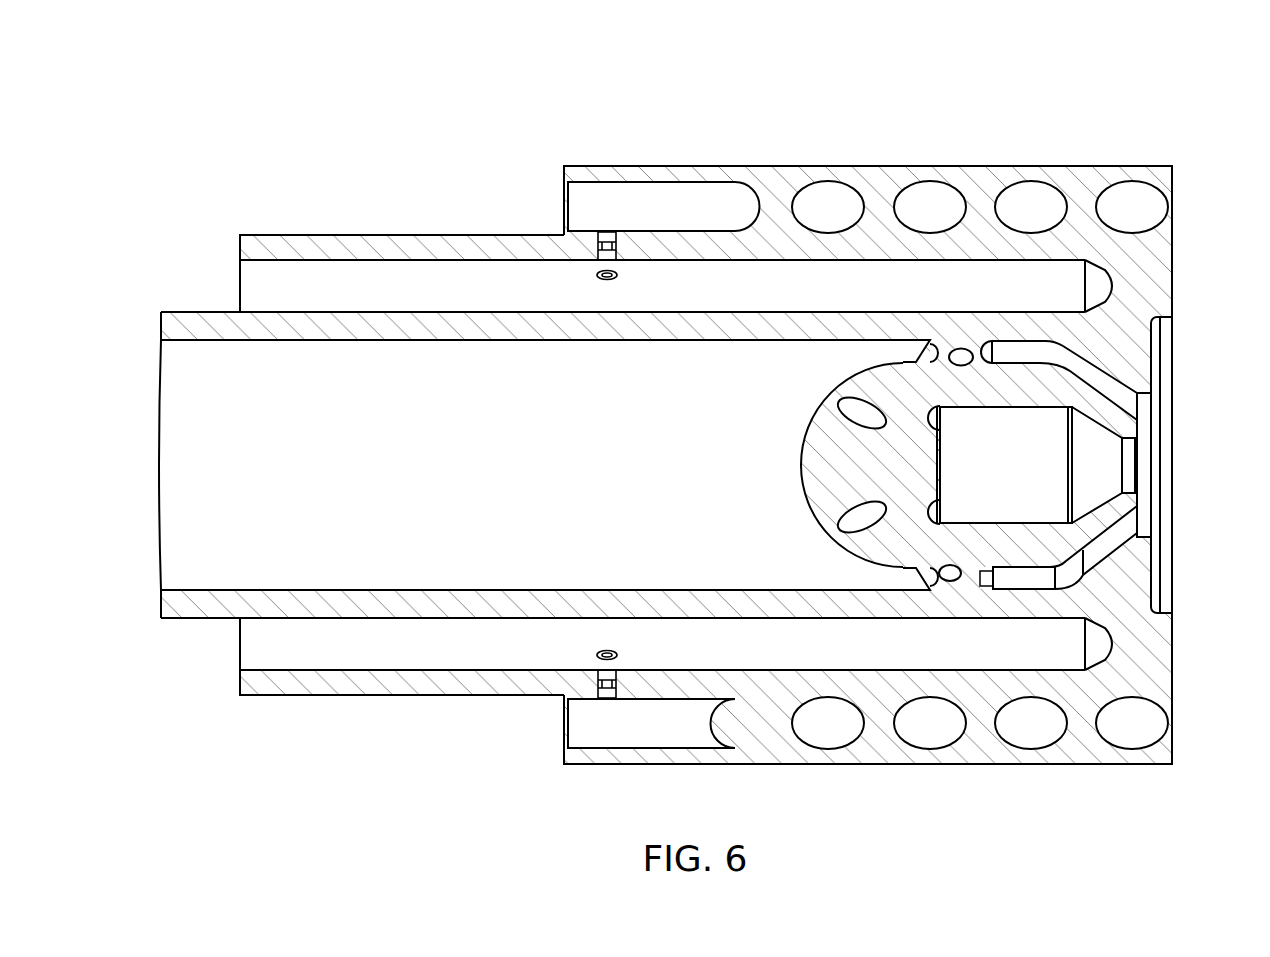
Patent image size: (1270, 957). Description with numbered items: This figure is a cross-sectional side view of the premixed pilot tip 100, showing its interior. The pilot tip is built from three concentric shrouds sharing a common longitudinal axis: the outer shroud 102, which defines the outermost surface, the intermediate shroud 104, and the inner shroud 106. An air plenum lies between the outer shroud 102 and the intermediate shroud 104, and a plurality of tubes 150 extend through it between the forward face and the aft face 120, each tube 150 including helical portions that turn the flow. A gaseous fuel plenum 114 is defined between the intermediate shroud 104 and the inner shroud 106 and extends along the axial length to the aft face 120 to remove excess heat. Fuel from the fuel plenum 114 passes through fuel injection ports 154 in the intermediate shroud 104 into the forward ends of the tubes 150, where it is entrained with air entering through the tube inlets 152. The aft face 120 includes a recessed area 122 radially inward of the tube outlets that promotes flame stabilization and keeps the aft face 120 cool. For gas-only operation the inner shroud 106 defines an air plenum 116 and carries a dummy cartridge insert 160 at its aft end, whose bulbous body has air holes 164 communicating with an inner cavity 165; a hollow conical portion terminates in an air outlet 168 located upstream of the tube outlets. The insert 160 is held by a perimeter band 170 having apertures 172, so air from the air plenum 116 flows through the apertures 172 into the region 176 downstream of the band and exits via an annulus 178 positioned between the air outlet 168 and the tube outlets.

The premixed pilot tip 100 is at (433, 100).
The outer shroud 102 is at (876, 166).
The intermediate shroud 104 is at (387, 235).
The inner shroud 106 is at (173, 312).
The gaseous fuel plenum 114 is at (303, 657).
The air plenum 116 is at (265, 489).
The aft face 120 is at (1157, 283).
The recessed area 122 is at (1158, 353).
The tube 150 is at (813, 734).
The tube inlet 152 is at (563, 204).
The fuel injection port 154 is at (603, 229).
The dummy cartridge insert 160 is at (786, 478).
The air hole 164 is at (865, 532).
The inner cavity 165 is at (1020, 489).
The air outlet 168 is at (1128, 467).
The perimeter band 170 is at (979, 363).
The aperture 172 is at (1010, 618).
The region 176 is at (997, 575).
The annulus 178 is at (1147, 518).